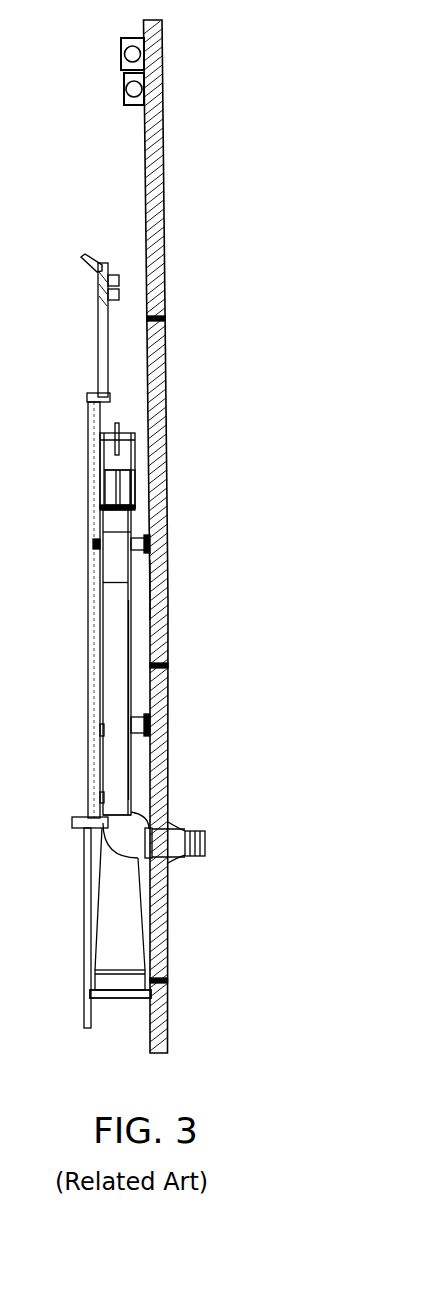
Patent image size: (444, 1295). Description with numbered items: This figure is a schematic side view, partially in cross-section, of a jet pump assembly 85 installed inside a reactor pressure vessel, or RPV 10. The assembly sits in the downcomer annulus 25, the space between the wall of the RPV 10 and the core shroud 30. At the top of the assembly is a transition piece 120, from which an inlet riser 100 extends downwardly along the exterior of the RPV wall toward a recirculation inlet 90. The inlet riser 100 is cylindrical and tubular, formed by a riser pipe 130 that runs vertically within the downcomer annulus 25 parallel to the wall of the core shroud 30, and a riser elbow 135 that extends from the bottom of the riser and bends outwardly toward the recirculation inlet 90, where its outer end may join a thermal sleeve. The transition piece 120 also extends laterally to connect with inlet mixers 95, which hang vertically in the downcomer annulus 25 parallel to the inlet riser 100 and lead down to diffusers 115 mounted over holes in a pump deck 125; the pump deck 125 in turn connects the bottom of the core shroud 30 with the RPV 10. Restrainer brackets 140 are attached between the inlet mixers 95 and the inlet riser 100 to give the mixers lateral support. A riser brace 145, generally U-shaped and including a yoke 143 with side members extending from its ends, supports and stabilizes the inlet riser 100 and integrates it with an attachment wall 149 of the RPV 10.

The RPV 10 is at (173, 246).
The core shroud 30 is at (77, 501).
The inlet riser 100 is at (91, 664).
The transition piece 120 is at (118, 461).
The jet pump assembly 85 is at (141, 490).
The riser brace 145 is at (146, 521).
The yoke 143 is at (100, 543).
The riser pipe 130 is at (133, 632).
The inlet mixers 95 is at (103, 565).
The downcomer annulus 25 is at (140, 692).
The attachment wall 149 is at (155, 594).
The restrainer brackets 140 is at (140, 730).
The riser elbow 135 is at (122, 843).
The recirculation inlet 90 is at (193, 830).
The diffusers 115 is at (142, 908).
The pump deck 125 is at (128, 998).